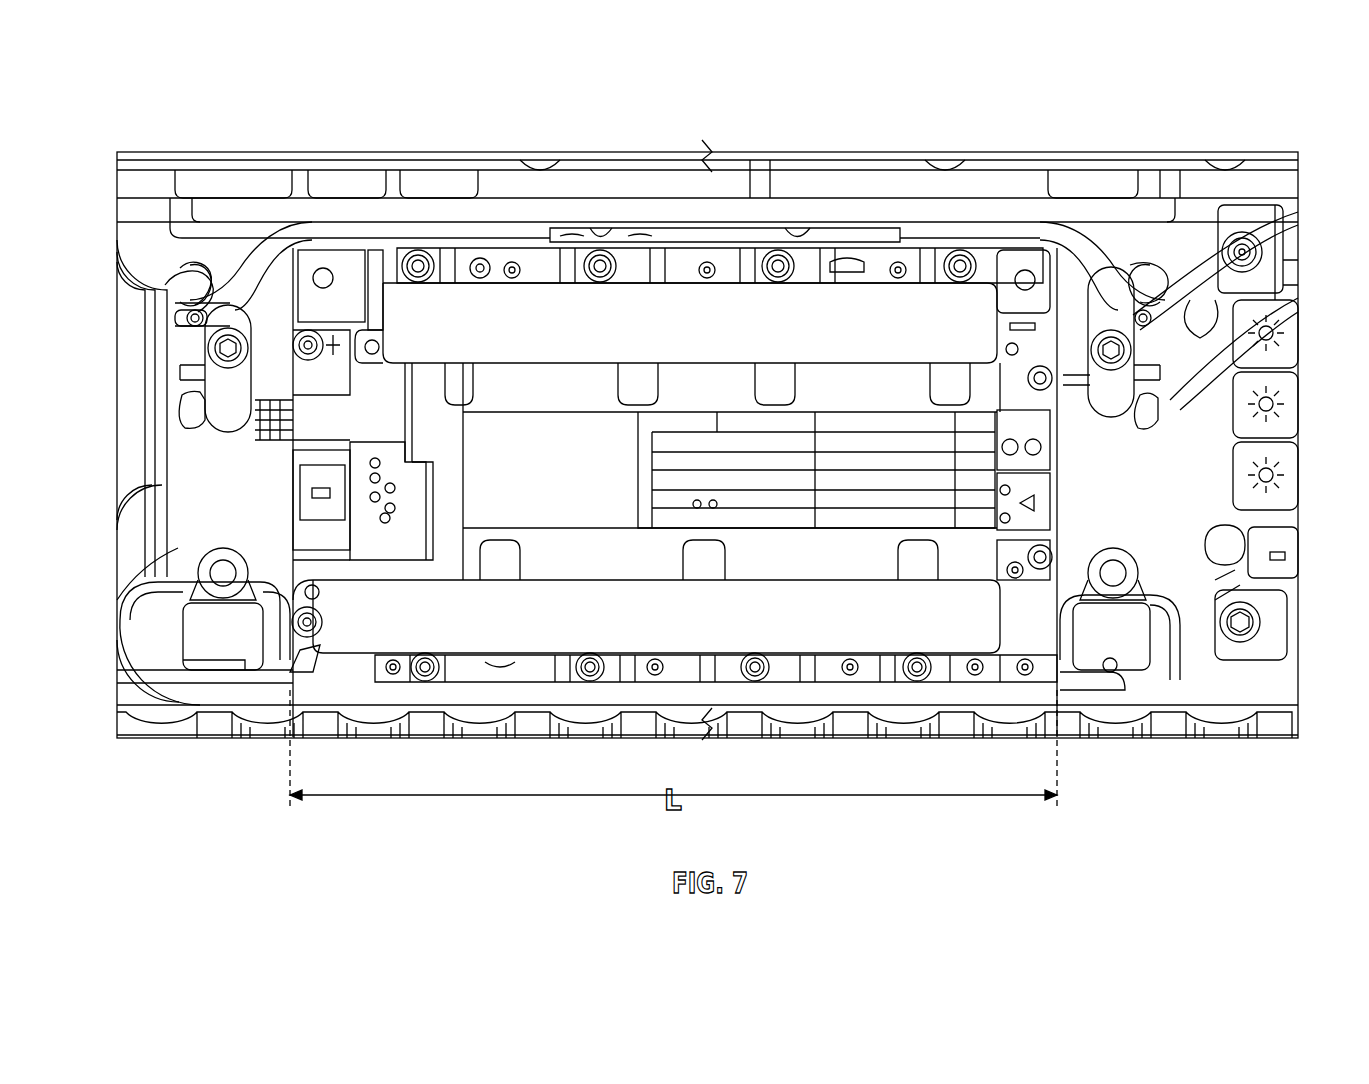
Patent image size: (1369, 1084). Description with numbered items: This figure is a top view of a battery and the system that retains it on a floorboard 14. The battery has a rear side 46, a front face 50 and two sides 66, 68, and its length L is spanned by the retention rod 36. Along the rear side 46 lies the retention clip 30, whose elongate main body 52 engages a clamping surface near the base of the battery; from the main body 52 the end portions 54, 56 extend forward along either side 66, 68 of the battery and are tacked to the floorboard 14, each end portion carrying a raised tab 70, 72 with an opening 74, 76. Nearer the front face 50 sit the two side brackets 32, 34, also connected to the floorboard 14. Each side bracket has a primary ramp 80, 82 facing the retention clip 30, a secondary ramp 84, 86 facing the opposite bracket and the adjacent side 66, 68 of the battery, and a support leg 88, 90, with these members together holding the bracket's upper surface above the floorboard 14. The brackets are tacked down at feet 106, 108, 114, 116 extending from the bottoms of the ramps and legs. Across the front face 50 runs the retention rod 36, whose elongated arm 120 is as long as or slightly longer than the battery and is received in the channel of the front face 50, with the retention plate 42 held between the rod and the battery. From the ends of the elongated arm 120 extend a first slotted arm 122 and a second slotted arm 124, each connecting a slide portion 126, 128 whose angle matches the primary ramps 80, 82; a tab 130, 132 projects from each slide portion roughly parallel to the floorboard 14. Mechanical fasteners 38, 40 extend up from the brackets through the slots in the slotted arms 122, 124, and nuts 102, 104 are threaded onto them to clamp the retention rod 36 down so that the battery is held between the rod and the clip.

The floorboard 14 is at (1214, 542).
The retention clip 30 is at (252, 660).
The side bracket 32 is at (1262, 292).
The second side bracket 34 is at (208, 348).
The retention rod 36 is at (572, 242).
The mechanical fastener 38 is at (1140, 358).
The second mechanical fastener 40 is at (178, 328).
The retention plate 42 is at (640, 242).
The rear side 46 is at (818, 685).
The front face 50 is at (493, 237).
The main body 52 is at (283, 672).
The end portion 54 is at (195, 625).
The end portion 56 is at (1118, 672).
The side 66 is at (292, 497).
The side 68 is at (1058, 500).
The raised tab 70 is at (205, 558).
The raised tab 72 is at (1118, 605).
The opening 74 is at (218, 578).
The opening 76 is at (1112, 568).
The primary ramp 80 is at (200, 335).
The primary ramp 82 is at (1150, 403).
The secondary ramp 84 is at (285, 315).
The secondary ramp 86 is at (1050, 390).
The support leg 88 is at (186, 316).
The support leg 90 is at (1265, 252).
The nut 102 is at (180, 372).
The nut 104 is at (1152, 380).
The foot 106 is at (245, 440).
The foot 108 is at (1128, 440).
The foot 114 is at (188, 272).
The foot 116 is at (1150, 272).
The elongated arm 120 is at (930, 230).
The first slotted arm 122 is at (117, 235).
The second slotted arm 124 is at (1245, 232).
The slide portion 126 is at (1298, 446).
The slide portion 128 is at (1138, 412).
The tab 130 is at (235, 440).
The tab 132 is at (1093, 437).